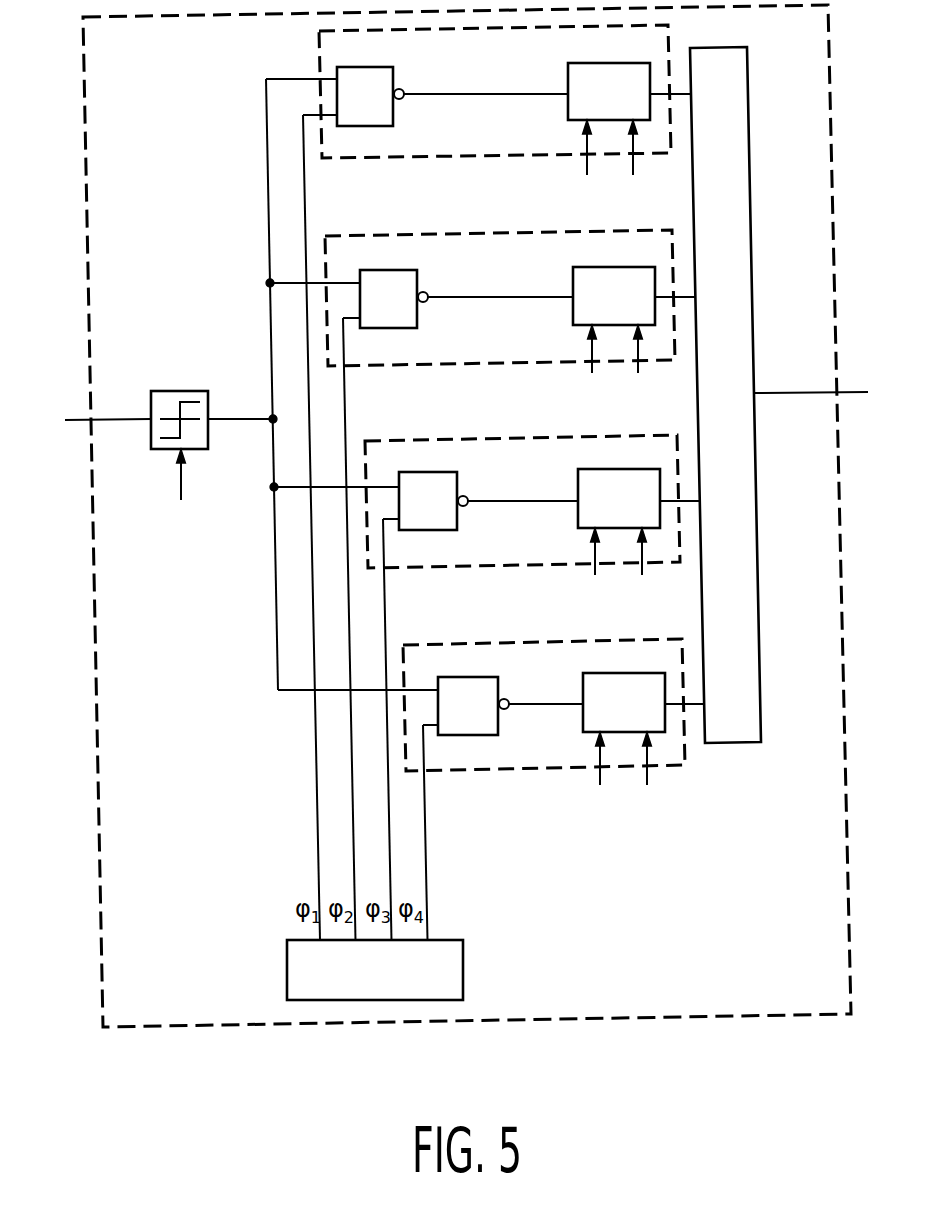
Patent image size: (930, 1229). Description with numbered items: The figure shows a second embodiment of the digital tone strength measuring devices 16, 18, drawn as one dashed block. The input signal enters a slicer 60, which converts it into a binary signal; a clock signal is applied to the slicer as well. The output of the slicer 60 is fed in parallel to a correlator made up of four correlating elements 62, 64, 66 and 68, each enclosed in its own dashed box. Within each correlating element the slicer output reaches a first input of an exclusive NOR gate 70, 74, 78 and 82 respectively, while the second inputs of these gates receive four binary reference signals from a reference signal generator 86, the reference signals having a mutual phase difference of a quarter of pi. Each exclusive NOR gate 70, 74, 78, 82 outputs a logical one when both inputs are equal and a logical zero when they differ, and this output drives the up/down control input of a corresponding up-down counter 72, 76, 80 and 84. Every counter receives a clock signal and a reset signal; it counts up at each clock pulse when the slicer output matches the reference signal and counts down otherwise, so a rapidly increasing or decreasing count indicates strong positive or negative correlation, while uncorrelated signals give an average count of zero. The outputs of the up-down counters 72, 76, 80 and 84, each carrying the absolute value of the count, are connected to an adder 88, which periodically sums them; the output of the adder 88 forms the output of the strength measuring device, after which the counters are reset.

The strength measuring device 16 is at (467, 541).
The strength measuring device 18 is at (160, 1027).
The slicer 60 is at (178, 391).
The correlating element 62 is at (505, 118).
The correlating element 64 is at (510, 321).
The correlating element 66 is at (532, 526).
The correlating element 68 is at (553, 731).
The exclusive NOR gate 70 is at (393, 121).
The up-down counter 72 is at (568, 109).
The exclusive NOR gate 74 is at (417, 323).
The up-down counter 76 is at (573, 313).
The exclusive NOR gate 78 is at (457, 520).
The up-down counter 80 is at (578, 514).
The exclusive NOR gate 82 is at (485, 735).
The up-down counter 84 is at (583, 720).
The reference signal generator 86 is at (463, 985).
The adder 88 is at (730, 745).